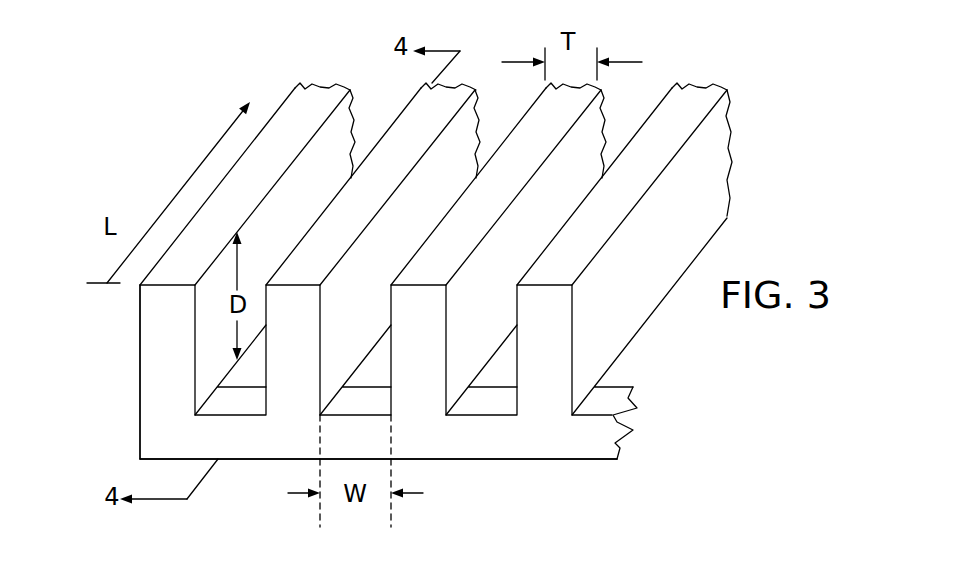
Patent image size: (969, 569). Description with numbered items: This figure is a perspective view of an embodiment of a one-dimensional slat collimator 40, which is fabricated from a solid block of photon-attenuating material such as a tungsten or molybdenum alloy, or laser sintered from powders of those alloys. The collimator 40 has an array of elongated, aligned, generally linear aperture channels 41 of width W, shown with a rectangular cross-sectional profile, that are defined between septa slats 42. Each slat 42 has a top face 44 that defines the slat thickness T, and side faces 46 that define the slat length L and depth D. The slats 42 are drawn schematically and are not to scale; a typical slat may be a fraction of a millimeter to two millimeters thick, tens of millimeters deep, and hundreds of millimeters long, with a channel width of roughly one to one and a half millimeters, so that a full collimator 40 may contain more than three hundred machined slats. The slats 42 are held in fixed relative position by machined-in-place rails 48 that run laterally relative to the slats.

The one-dimensional collimator 40 is at (637, 475).
The aperture channels 41 is at (485, 367).
The septa slats 42 is at (300, 87).
The top face 44 is at (200, 243).
The side faces 46 is at (203, 323).
The rails 48 is at (532, 442).